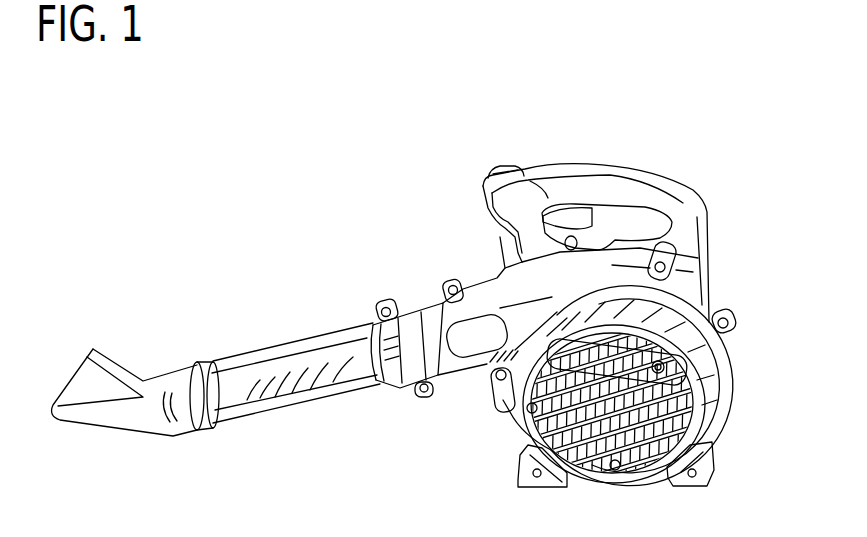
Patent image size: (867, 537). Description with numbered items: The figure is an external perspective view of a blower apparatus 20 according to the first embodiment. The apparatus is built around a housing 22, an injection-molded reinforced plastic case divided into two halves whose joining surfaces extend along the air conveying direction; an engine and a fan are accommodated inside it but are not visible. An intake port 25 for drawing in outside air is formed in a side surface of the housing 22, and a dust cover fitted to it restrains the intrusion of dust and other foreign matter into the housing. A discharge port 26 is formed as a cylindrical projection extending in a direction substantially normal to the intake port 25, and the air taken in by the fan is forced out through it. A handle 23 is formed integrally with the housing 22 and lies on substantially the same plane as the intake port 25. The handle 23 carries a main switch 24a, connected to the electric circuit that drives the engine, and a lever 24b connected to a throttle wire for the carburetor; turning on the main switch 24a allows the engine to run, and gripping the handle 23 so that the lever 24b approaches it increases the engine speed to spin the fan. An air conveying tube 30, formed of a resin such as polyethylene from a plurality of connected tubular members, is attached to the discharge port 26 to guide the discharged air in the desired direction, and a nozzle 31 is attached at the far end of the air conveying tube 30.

The blower apparatus 20 is at (142, 176).
The housing 22 is at (728, 272).
The handle 23 is at (656, 178).
The main switch 24a is at (503, 166).
The lever 24b is at (572, 208).
The intake port 25 is at (543, 426).
The discharge port 26 is at (410, 303).
The air conveying tube 30 is at (194, 328).
The nozzle 31 is at (110, 358).